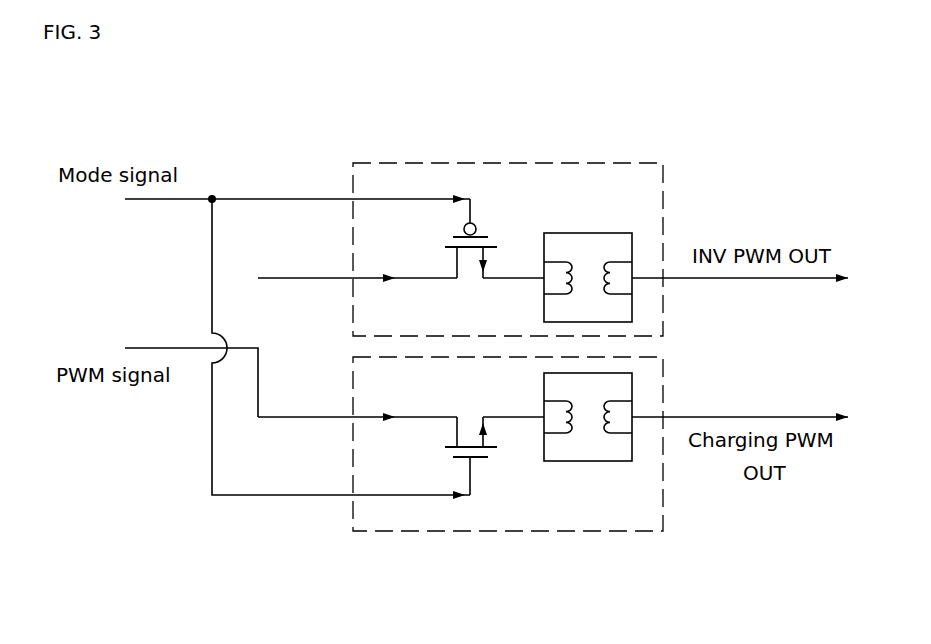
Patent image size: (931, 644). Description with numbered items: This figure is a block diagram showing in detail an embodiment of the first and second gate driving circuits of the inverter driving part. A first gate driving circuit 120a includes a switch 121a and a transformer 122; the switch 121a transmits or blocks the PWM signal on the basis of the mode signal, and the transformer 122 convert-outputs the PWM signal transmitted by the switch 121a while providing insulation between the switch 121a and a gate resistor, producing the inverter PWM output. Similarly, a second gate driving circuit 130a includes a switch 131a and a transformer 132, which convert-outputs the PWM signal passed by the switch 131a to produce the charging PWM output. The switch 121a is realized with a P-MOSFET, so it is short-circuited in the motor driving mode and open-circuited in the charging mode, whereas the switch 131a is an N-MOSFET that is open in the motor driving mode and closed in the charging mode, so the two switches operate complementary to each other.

The first gate driving circuit 120a is at (408, 163).
The switch 121a is at (484, 232).
The transformer 122 is at (599, 233).
The second gate driving circuit 130a is at (406, 531).
The switch 131a is at (483, 458).
The transformer 132 is at (599, 461).